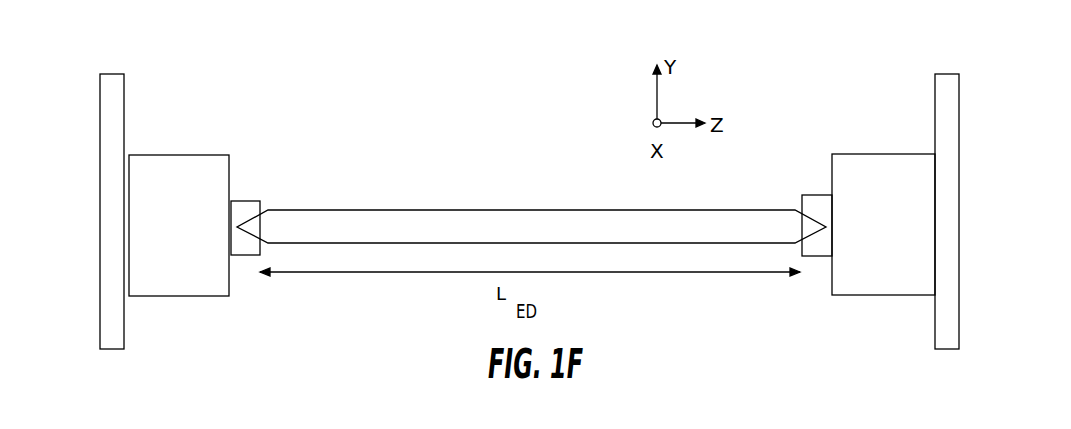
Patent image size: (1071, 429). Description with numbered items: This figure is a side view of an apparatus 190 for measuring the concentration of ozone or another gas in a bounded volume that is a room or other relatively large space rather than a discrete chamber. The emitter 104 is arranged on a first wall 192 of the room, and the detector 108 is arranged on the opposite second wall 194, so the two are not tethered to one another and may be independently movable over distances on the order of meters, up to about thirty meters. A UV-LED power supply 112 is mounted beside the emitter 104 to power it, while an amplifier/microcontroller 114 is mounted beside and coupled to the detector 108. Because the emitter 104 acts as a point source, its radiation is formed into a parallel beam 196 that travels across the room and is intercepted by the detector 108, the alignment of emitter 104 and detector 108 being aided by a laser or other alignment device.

The apparatus 190 is at (378, 91).
The first wall 192 is at (115, 73).
The second wall 194 is at (944, 73).
The UV-LED power supply 112 is at (193, 154).
The amplifier/microcontroller 114 is at (866, 163).
The emitter 104 is at (246, 200).
The detector 108 is at (812, 194).
The beam 196 is at (480, 209).